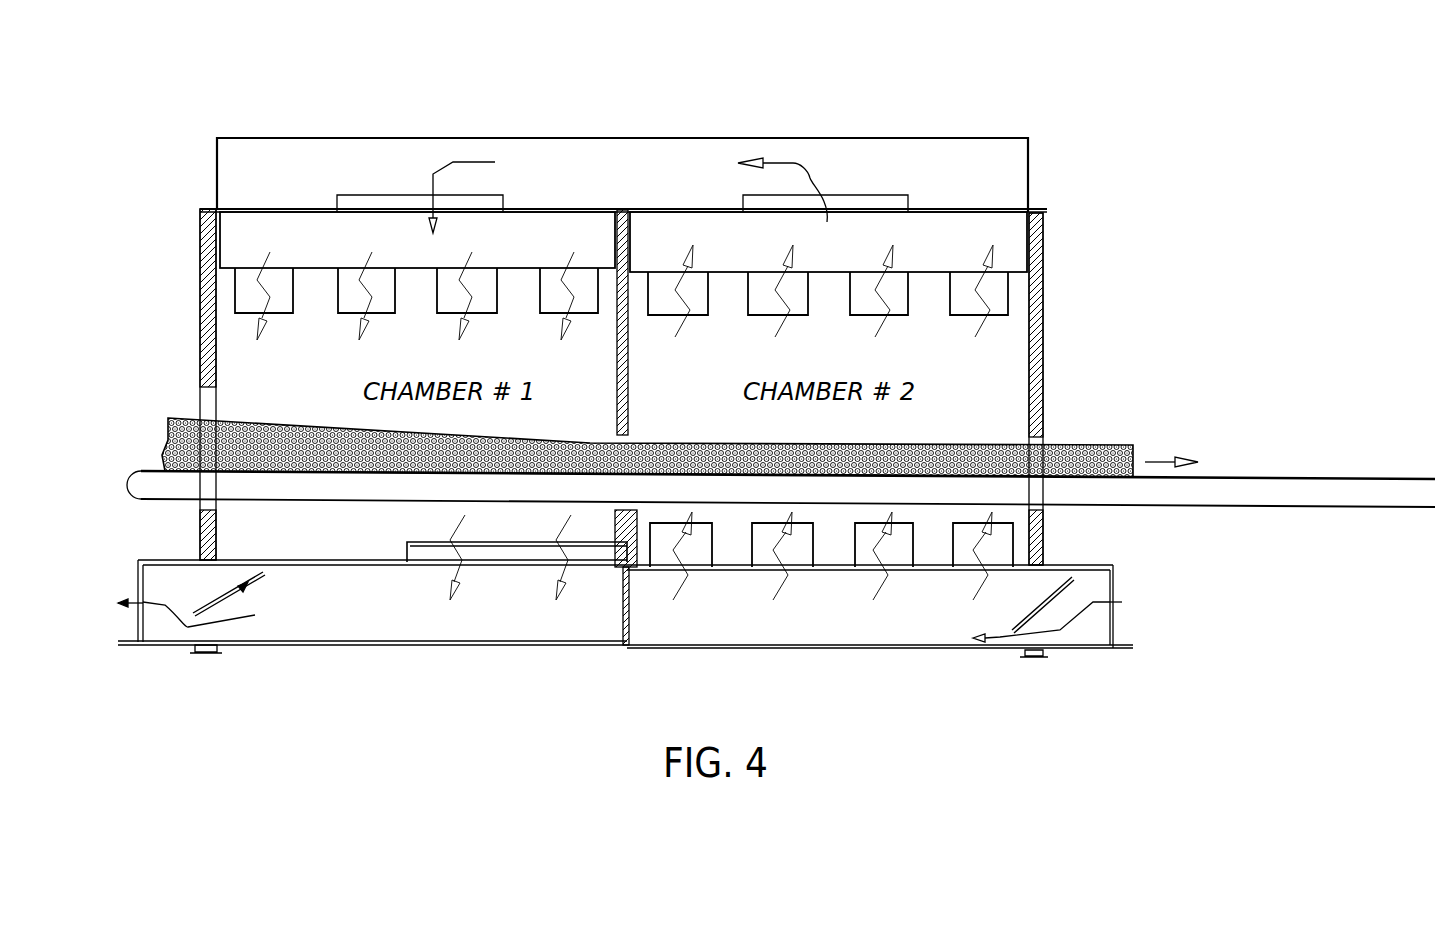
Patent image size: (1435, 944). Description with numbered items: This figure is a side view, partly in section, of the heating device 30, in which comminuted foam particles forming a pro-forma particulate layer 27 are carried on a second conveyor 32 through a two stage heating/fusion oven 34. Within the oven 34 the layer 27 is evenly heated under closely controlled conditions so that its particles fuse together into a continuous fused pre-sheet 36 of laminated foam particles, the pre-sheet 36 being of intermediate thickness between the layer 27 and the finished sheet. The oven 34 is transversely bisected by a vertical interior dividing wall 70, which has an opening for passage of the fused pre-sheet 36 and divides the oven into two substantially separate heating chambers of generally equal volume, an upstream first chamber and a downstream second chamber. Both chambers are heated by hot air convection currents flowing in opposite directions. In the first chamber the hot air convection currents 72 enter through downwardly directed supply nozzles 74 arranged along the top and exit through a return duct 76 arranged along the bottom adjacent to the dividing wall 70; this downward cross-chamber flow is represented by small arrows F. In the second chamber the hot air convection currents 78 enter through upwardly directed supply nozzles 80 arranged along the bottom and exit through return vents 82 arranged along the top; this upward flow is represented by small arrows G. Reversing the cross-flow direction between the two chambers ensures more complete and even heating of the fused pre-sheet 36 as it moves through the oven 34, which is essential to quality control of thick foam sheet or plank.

The heating device 30 is at (865, 100).
The hot air convection currents 72 is at (472, 162).
The heating/fusion oven 34 is at (1062, 232).
The vertical interior dividing wall 70 is at (637, 367).
The downwardly directed supply nozzles 74 is at (340, 313).
The return vents 82 is at (908, 302).
The pro-forma particulate layer 27 is at (183, 417).
The fused pre-sheet 36 is at (1100, 442).
The second conveyor 32 is at (1248, 478).
The return duct 76 is at (405, 557).
The hot air convection currents 78 is at (765, 592).
The upwardly directed supply nozzles 80 is at (947, 547).
The small arrows F is at (478, 257).
The small arrows G is at (887, 258).